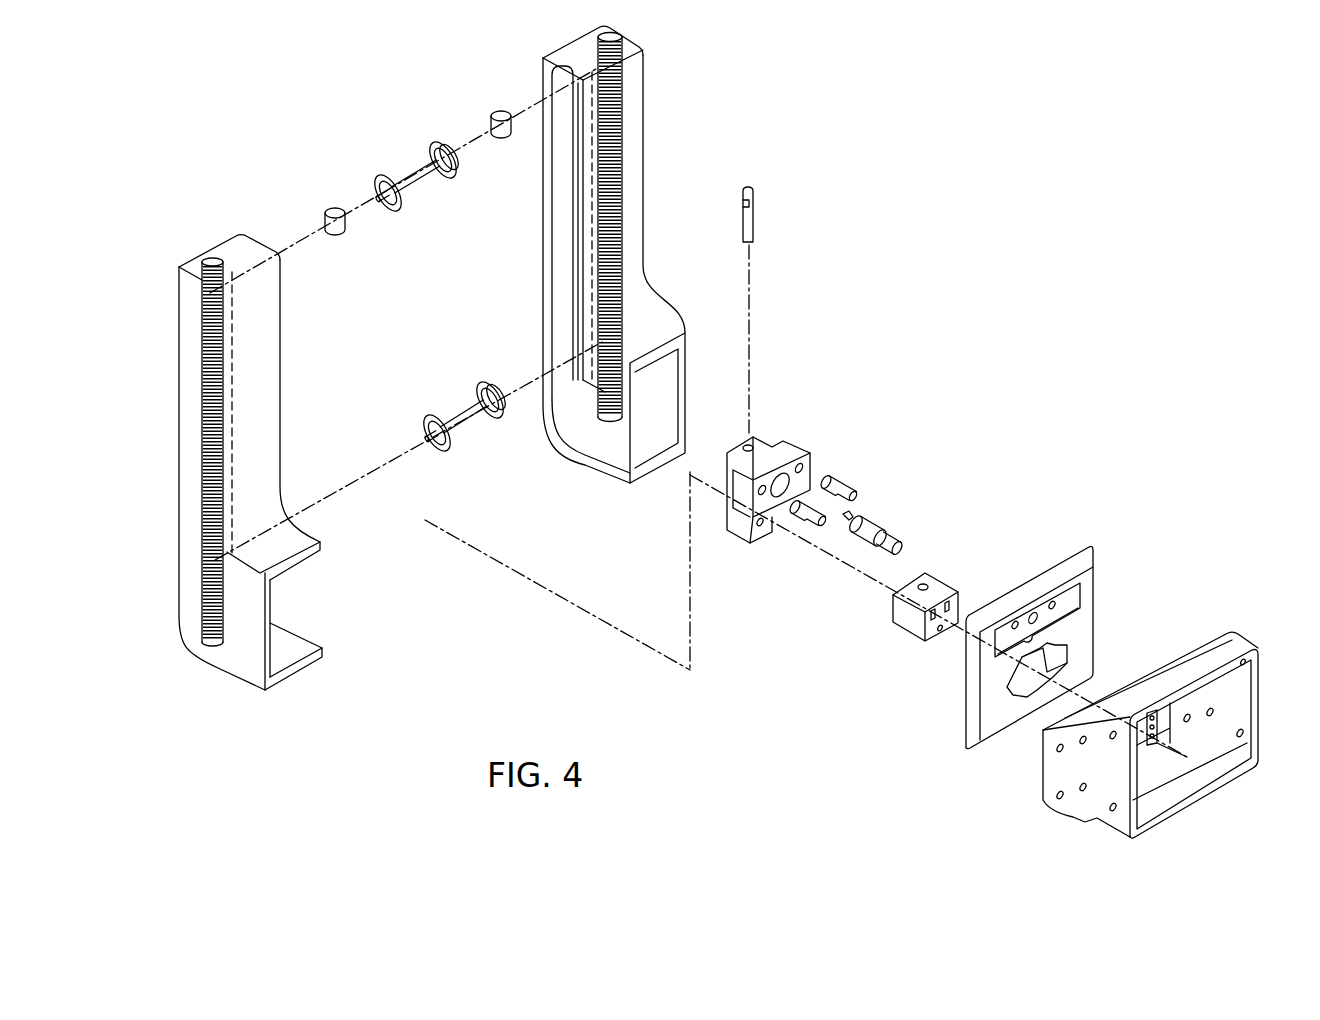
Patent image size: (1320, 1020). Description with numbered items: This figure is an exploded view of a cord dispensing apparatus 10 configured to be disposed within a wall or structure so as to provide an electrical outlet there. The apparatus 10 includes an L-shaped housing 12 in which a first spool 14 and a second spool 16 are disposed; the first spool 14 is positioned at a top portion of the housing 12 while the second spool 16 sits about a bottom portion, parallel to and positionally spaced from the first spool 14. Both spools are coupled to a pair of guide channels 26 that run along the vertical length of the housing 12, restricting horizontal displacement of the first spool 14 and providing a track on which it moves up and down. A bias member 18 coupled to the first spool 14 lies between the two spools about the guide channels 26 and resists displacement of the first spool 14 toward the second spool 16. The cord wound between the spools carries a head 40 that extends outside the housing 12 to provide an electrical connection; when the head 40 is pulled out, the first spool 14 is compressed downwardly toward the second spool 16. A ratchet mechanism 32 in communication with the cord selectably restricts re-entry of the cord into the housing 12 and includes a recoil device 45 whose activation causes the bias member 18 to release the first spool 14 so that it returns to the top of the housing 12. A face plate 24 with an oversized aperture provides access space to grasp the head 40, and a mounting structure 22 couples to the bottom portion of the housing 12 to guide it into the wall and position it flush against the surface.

The cord dispensing apparatus 10 is at (1090, 188).
The L-shaped housing 12 is at (633, 133).
The first spool 14 is at (410, 168).
The second spool 16 is at (458, 413).
The bias member 18 is at (203, 582).
The mounting structure 22 is at (1237, 642).
The face plate 24 is at (1088, 630).
The guide channels 26 is at (203, 607).
The ratchet mechanism 32 is at (787, 451).
The head 40 is at (942, 576).
The recoil device 45 is at (876, 521).